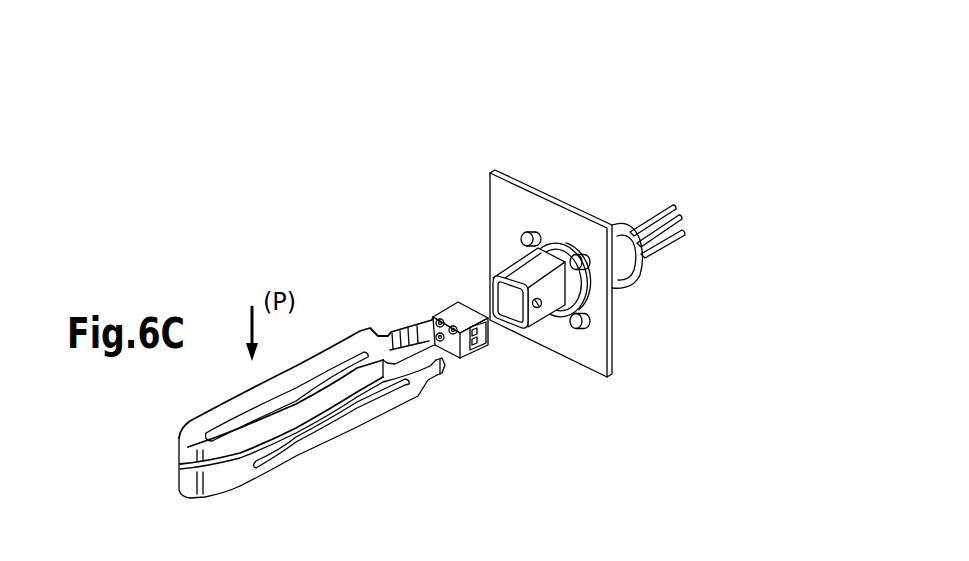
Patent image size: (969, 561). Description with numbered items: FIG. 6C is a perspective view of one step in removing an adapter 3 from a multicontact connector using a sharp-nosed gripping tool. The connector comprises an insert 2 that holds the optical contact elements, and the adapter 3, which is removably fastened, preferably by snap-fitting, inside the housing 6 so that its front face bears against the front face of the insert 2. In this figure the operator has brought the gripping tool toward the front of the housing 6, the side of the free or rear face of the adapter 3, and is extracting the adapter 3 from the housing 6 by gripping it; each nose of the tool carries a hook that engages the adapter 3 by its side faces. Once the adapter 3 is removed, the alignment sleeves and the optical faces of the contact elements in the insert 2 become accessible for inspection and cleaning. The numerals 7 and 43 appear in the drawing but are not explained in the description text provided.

The insert 2 is at (638, 257).
The adapter 3 is at (453, 312).
The housing 6 is at (552, 307).
The mounting plate 7 is at (549, 168).
The connector pins 43 is at (672, 204).